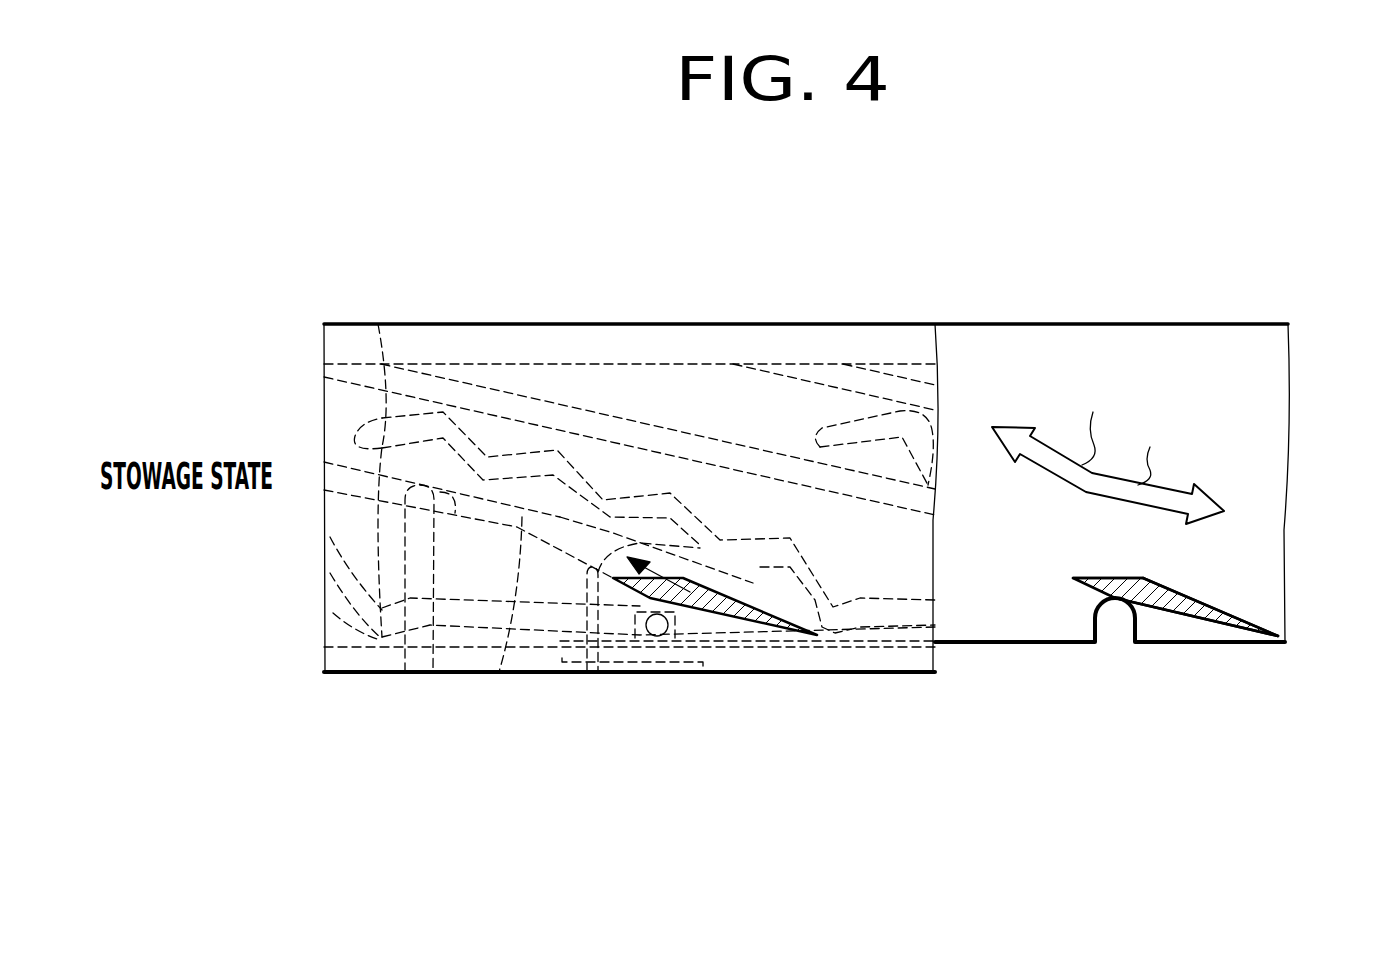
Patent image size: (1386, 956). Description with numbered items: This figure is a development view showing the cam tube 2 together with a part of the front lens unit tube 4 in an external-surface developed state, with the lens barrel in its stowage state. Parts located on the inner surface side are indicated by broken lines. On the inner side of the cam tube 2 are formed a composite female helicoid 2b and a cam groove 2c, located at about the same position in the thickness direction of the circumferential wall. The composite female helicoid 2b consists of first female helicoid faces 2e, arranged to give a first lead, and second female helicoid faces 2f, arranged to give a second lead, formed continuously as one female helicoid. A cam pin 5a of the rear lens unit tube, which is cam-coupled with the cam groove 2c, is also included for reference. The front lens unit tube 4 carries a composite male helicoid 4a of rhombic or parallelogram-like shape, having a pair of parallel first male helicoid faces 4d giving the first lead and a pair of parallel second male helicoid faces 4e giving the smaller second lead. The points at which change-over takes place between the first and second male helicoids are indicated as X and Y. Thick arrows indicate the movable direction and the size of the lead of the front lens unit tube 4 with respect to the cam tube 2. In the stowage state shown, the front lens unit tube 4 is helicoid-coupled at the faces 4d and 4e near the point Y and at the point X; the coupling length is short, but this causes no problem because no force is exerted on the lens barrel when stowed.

The cam tube 2 is at (340, 334).
The cam groove 2c is at (353, 430).
The first female helicoid faces 2e is at (433, 672).
The composite female helicoid 2b is at (499, 672).
The second female helicoid faces 2f is at (598, 672).
The cam pin 5a is at (661, 637).
The front lens unit tube 4 is at (1102, 342).
The composite male helicoid 4a is at (1212, 605).
The first male helicoid faces 4d is at (1182, 588).
The second male helicoid faces 4e is at (1255, 625).
The change-over point X is at (1207, 610).
The change-over point Y is at (1108, 598).